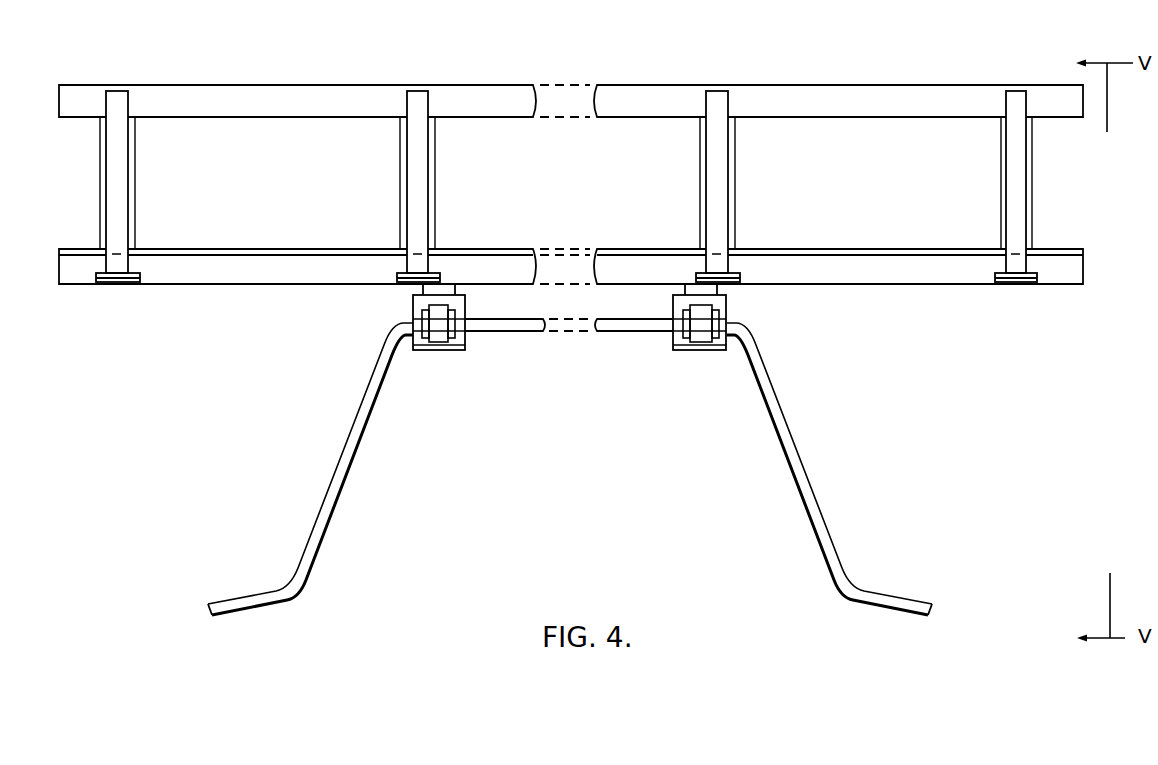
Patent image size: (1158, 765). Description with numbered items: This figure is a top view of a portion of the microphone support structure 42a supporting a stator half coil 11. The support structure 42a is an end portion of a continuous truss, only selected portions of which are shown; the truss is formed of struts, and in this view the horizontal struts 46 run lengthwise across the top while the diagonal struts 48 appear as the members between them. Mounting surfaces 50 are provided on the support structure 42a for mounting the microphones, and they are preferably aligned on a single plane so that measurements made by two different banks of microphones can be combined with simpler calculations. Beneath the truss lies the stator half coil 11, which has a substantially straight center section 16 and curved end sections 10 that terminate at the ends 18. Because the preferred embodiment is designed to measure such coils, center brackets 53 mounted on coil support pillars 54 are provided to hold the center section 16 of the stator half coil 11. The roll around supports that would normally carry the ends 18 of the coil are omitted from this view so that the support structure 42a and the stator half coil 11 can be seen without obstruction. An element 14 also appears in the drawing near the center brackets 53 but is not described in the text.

The curved end section 10 is at (345, 455).
The stator half coil 11 is at (373, 430).
The bracket 14 is at (405, 324).
The center section 16 is at (596, 327).
The end 18 is at (206, 605).
The support structure 42a is at (286, 292).
The horizontal strut 46 is at (222, 97).
The diagonal strut 48 is at (120, 183).
The mounting surface 50 is at (129, 283).
The center bracket 53 is at (442, 349).
The coil support pillar 54 is at (413, 352).